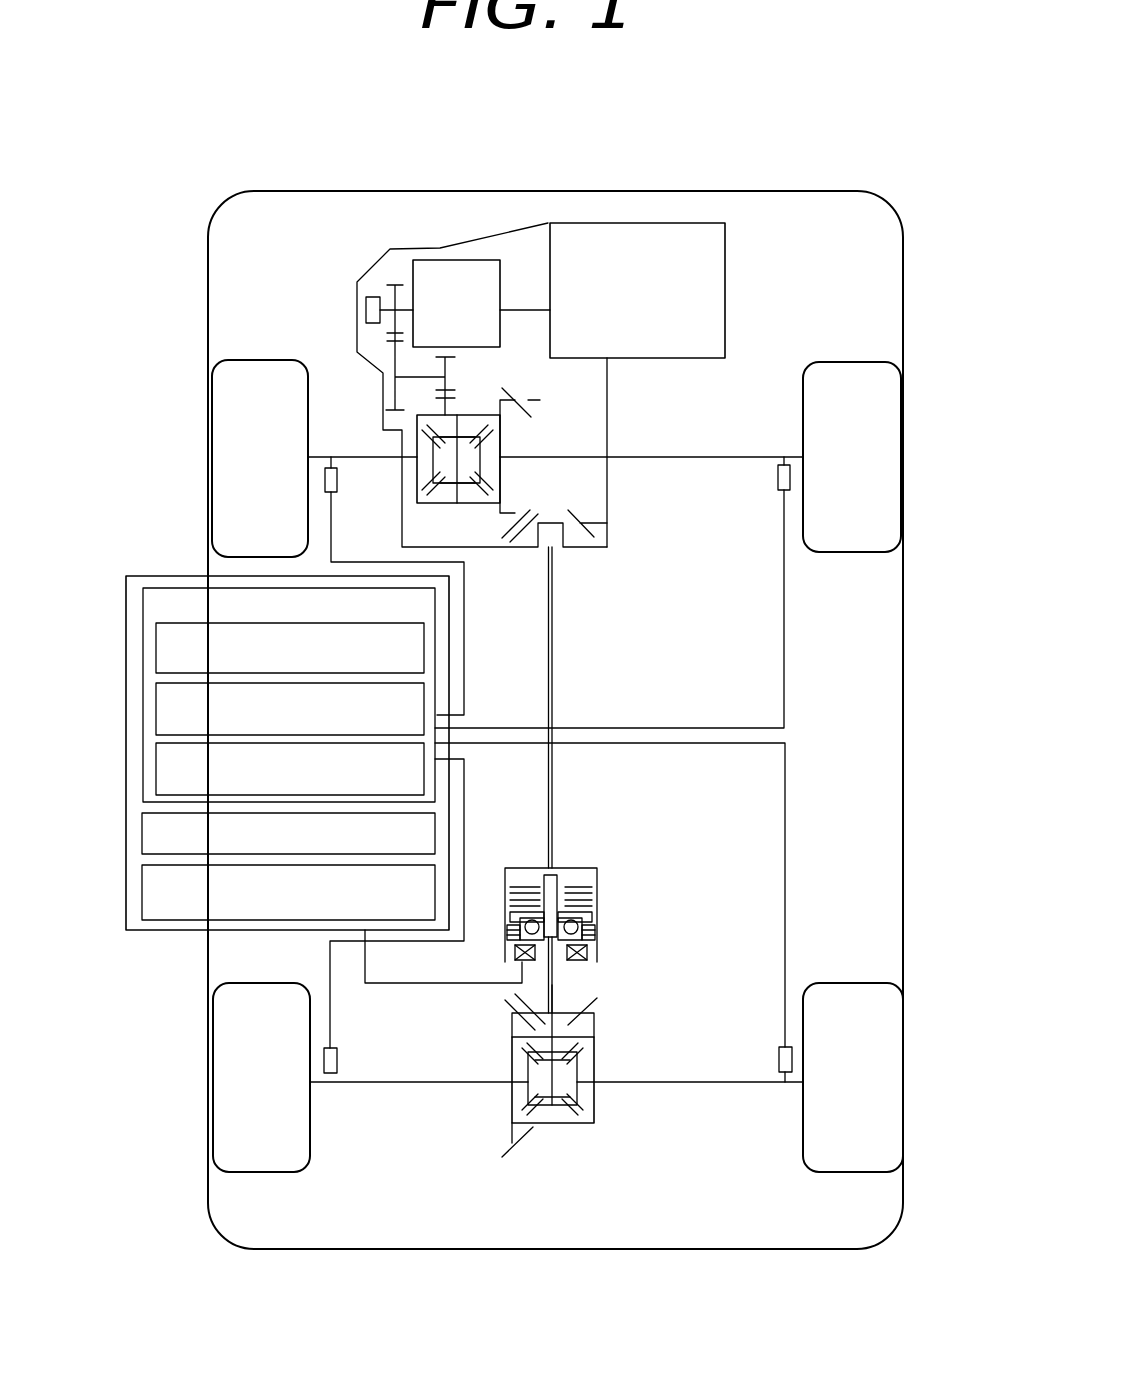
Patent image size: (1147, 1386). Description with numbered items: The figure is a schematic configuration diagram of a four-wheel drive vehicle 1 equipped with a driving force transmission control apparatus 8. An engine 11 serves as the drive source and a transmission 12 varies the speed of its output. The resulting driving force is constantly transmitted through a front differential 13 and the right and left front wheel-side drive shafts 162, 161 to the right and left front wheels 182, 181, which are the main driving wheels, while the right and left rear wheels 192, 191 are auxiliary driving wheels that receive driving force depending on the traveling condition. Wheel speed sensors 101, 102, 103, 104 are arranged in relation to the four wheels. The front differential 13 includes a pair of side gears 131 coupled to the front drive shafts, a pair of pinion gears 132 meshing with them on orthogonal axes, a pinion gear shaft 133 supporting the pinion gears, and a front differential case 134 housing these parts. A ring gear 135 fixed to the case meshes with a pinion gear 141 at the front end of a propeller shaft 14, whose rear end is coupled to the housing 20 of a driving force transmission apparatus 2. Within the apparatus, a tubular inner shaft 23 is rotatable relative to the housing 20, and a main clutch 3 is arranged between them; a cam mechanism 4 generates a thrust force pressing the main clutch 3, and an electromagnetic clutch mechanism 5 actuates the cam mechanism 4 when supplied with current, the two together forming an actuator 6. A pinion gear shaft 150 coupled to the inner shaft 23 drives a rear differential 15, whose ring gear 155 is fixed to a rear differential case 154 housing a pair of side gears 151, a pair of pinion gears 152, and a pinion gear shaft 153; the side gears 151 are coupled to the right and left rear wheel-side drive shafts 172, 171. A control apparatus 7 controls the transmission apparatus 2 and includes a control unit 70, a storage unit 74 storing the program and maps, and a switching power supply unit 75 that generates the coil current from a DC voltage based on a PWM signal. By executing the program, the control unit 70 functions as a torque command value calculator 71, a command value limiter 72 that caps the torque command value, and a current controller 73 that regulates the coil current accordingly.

The four-wheel drive vehicle 1 is at (839, 144).
The driving force transmission apparatus 2 is at (579, 853).
The main clutch 3 is at (590, 888).
The cam mechanism 4 is at (590, 915).
The electromagnetic clutch mechanism 5 is at (590, 935).
The actuator 6 is at (635, 897).
The control apparatus 7 is at (160, 576).
The driving force transmission control apparatus 8 is at (622, 787).
The engine 11 is at (670, 223).
The transmission 12 is at (447, 260).
The front differential 13 is at (423, 519).
The propeller shaft 14 is at (554, 656).
The rear differential 15 is at (614, 1118).
The housing 20 is at (515, 868).
The inner shaft 23 is at (547, 875).
The control unit 70 is at (143, 606).
The torque command value calculator 71 is at (156, 648).
The command value limiter 72 is at (156, 706).
The current controller 73 is at (156, 760).
The storage unit 74 is at (142, 831).
The switching power supply unit 75 is at (142, 888).
The wheel speed sensor 101 is at (331, 462).
The wheel speed sensor 102 is at (781, 462).
The wheel speed sensor 103 is at (340, 1057).
The wheel speed sensor 104 is at (780, 1050).
The side gear 131 is at (432, 472).
The pinion gear 132 is at (463, 432).
The pinion gear shaft 133 is at (455, 457).
The front differential case 134 is at (425, 412).
The ring gear 135 is at (534, 388).
The pinion gear 141 is at (598, 527).
The pinion gear shaft 150 is at (553, 987).
The side gear 151 is at (618, 1043).
The pinion gear 152 is at (595, 1037).
The pinion gear shaft 153 is at (552, 1078).
The rear differential case 154 is at (578, 1123).
The ring gear 155 is at (506, 1012).
The left front wheel-side drive shaft 161 is at (372, 455).
The right front wheel-side drive shaft 162 is at (652, 455).
The left rear wheel-side drive shaft 171 is at (426, 1085).
The right rear wheel-side drive shaft 172 is at (740, 1084).
The left front wheel 181 is at (222, 431).
The right front wheel 182 is at (893, 431).
The left rear wheel 191 is at (222, 1103).
The right rear wheel 192 is at (893, 1102).